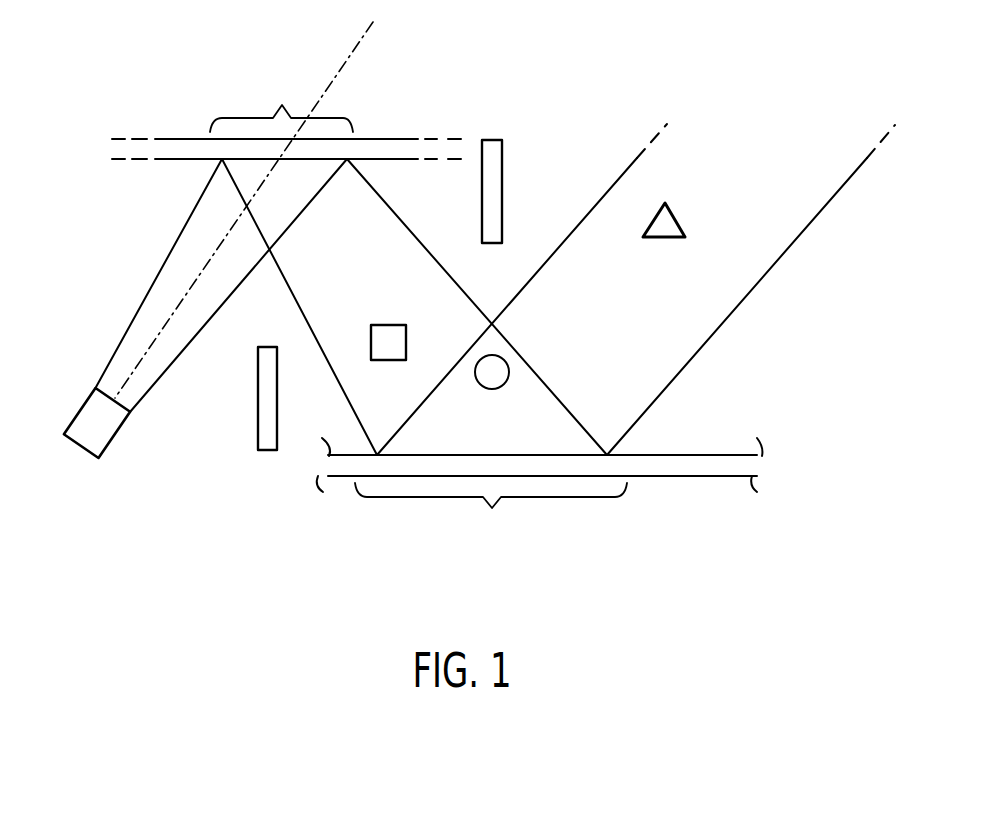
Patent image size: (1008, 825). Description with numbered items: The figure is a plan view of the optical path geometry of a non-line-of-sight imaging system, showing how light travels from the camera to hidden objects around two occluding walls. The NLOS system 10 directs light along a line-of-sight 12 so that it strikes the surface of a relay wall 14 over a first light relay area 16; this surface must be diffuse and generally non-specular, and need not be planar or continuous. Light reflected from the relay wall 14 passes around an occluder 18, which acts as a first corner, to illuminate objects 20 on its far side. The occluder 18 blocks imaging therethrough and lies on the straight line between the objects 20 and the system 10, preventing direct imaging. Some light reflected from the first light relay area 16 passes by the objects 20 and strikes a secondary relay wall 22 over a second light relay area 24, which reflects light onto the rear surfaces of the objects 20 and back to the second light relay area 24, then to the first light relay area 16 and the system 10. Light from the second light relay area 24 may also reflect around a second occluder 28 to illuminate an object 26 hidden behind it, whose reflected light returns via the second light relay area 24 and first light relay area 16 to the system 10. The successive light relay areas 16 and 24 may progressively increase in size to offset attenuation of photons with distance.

The non-line-of-sight system 10 is at (57, 459).
The line-of-sight 12 is at (357, 48).
The relay wall 14 is at (188, 139).
The first light relay area 16 is at (281, 103).
The occluder 18 is at (258, 397).
The objects 20 is at (388, 325).
The secondary relay wall 22 is at (712, 455).
The second light relay area 24 is at (491, 511).
The object 26 is at (672, 240).
The second occluder 28 is at (502, 162).